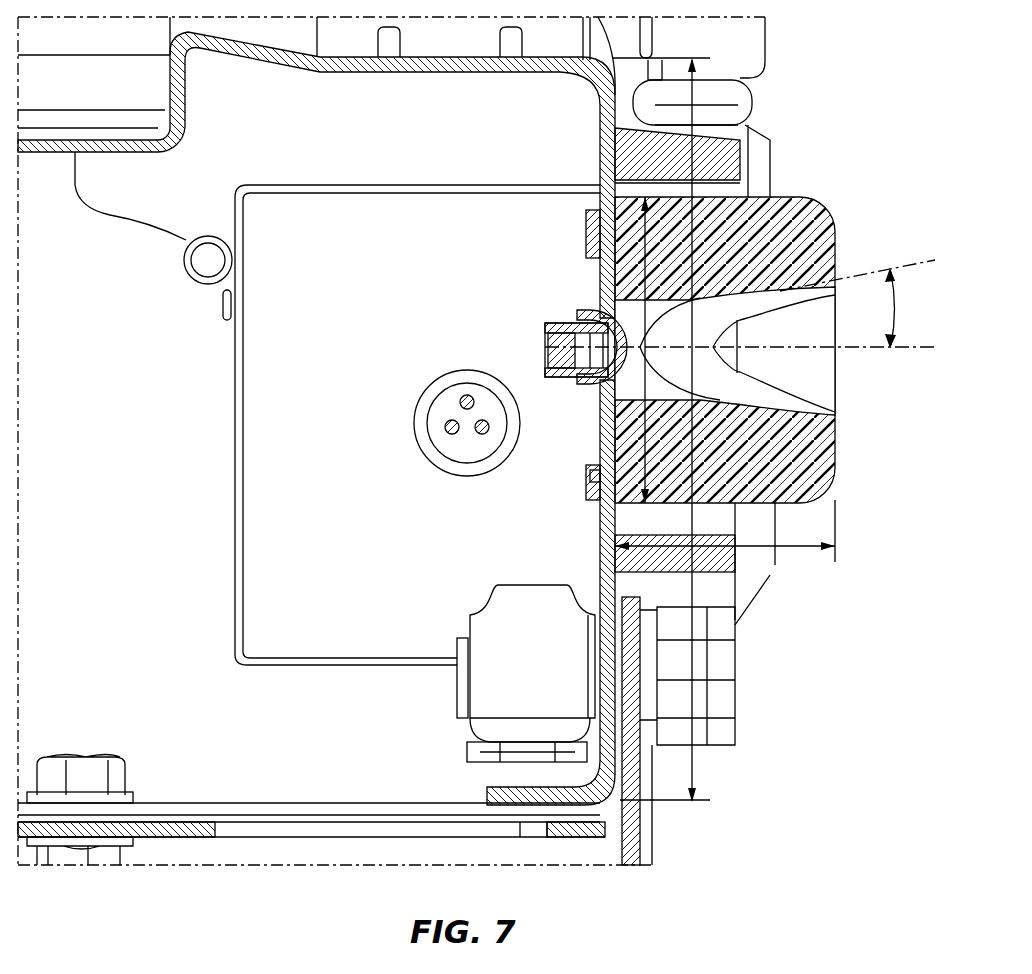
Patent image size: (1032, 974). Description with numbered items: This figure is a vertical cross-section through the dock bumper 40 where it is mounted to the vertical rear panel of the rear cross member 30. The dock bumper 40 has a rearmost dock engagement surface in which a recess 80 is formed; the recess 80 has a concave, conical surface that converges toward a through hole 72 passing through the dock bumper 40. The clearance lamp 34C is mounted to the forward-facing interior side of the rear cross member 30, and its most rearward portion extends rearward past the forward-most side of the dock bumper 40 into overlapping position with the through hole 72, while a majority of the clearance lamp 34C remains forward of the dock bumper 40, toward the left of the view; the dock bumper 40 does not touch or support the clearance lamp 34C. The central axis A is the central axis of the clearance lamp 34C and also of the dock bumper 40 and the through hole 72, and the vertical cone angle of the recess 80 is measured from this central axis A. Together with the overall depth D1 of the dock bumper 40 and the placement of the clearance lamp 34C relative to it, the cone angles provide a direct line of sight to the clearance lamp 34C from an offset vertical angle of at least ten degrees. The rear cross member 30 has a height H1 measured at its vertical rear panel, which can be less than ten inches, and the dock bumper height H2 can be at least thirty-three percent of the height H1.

The rear cross member 30 is at (613, 522).
The dock bumper 40 is at (756, 325).
The recess 80 is at (797, 403).
The through hole 72 is at (605, 392).
The clearance lamp 34C is at (590, 320).
The central axis A is at (862, 350).
The rear cross member height H1 is at (663, 430).
The dock bumper height H2 is at (643, 350).
The overall depth of the dock bumper D1 is at (752, 552).